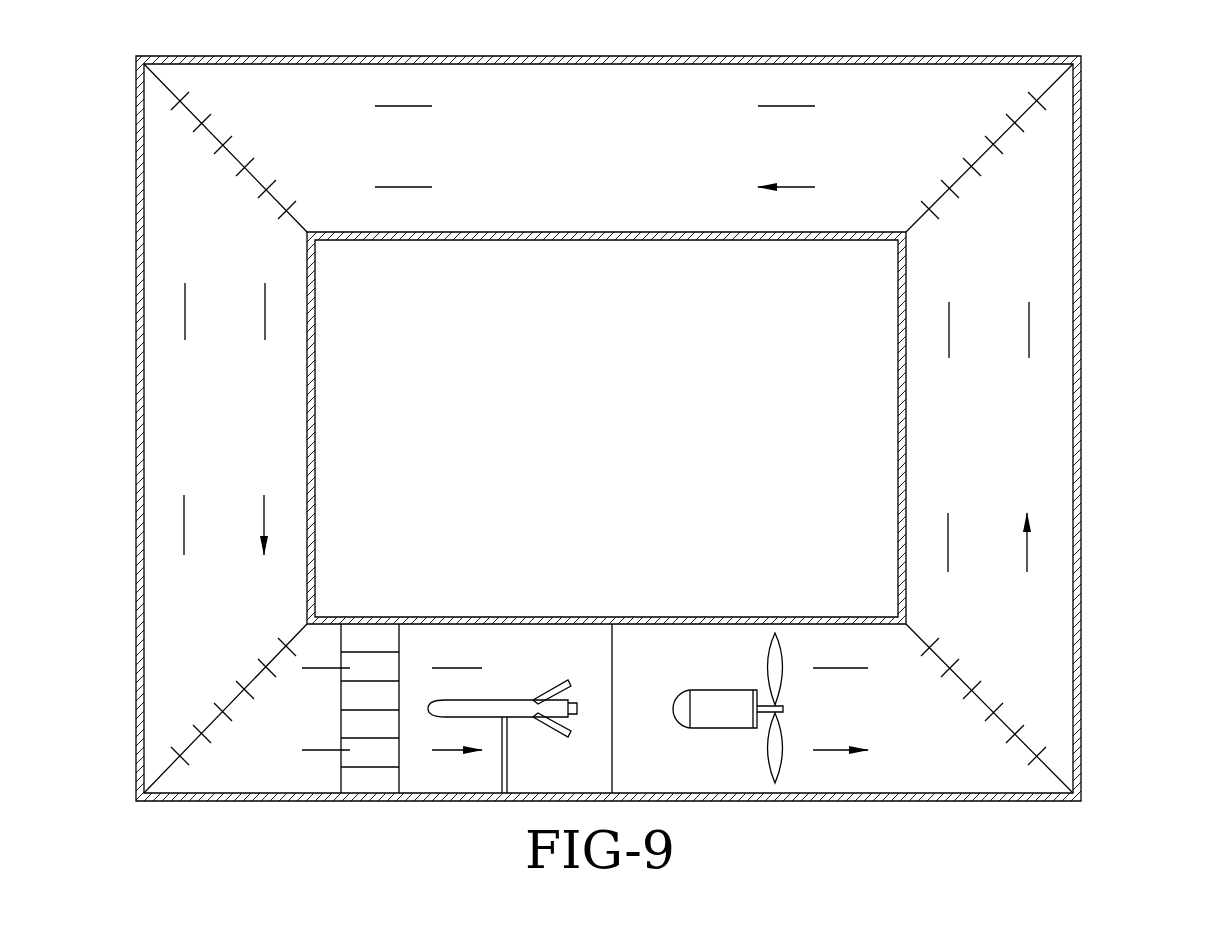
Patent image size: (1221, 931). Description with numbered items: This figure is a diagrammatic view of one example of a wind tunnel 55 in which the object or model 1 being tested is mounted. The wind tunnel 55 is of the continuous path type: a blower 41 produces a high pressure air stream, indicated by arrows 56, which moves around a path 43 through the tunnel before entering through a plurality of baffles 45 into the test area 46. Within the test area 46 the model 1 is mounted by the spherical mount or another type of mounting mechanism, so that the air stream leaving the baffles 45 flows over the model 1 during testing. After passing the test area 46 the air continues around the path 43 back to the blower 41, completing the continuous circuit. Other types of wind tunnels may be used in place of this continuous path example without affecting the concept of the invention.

The model 1 is at (491, 698).
The blower 41 is at (724, 694).
The path 43 is at (1031, 413).
The baffles 45 is at (371, 640).
The test area 46 is at (479, 645).
The wind tunnel 55 is at (1082, 333).
The arrows 56 is at (835, 670).